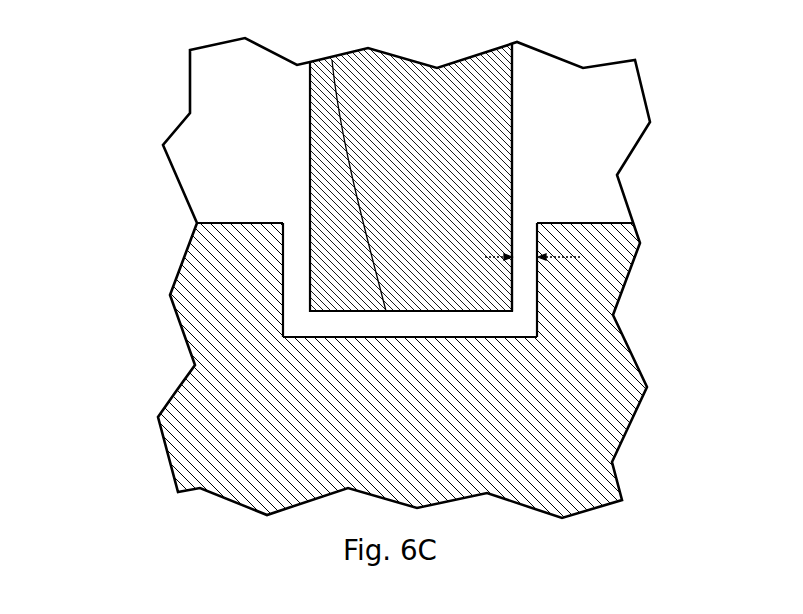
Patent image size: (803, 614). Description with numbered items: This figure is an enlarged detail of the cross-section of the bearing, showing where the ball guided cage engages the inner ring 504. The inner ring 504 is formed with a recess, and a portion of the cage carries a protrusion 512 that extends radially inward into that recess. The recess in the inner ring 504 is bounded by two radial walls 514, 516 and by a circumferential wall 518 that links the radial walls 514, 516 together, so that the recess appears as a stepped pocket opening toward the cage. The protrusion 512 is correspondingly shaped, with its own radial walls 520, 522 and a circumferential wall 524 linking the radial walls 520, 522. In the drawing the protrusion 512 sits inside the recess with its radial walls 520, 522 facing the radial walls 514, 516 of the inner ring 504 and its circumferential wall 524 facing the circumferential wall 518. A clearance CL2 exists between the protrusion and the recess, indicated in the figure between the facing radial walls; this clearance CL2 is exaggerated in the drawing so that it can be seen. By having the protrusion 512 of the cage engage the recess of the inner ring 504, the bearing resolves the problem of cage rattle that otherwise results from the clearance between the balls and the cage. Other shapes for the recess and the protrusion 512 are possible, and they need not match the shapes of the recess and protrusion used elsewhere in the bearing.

The inner ring 504 is at (596, 519).
The protrusion 512 is at (448, 126).
The radial wall 514 is at (283, 288).
The radial wall 516 is at (537, 295).
The circumferential wall 518 is at (477, 337).
The radial wall 520 is at (310, 191).
The radial wall 522 is at (512, 160).
The circumferential wall 524 is at (332, 60).
The clearance CL2 is at (540, 256).